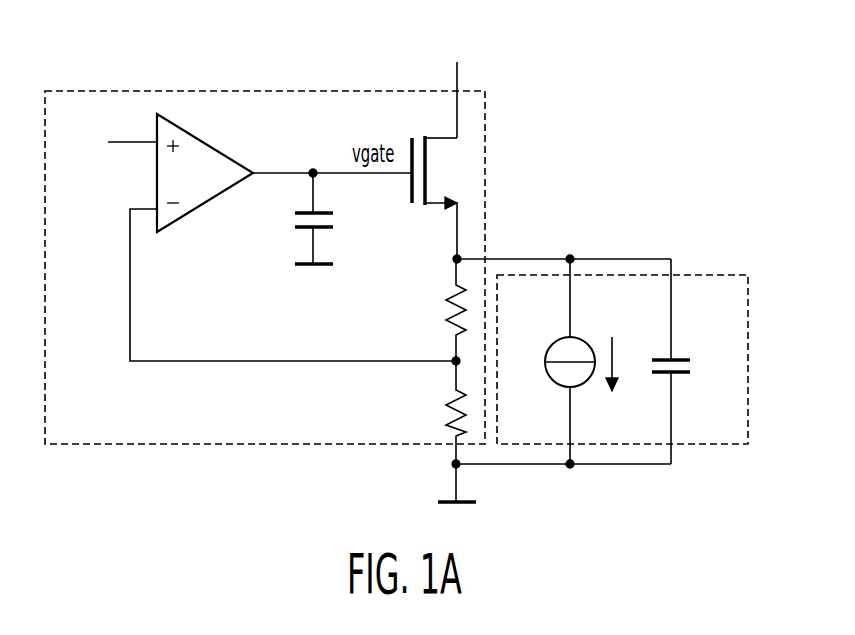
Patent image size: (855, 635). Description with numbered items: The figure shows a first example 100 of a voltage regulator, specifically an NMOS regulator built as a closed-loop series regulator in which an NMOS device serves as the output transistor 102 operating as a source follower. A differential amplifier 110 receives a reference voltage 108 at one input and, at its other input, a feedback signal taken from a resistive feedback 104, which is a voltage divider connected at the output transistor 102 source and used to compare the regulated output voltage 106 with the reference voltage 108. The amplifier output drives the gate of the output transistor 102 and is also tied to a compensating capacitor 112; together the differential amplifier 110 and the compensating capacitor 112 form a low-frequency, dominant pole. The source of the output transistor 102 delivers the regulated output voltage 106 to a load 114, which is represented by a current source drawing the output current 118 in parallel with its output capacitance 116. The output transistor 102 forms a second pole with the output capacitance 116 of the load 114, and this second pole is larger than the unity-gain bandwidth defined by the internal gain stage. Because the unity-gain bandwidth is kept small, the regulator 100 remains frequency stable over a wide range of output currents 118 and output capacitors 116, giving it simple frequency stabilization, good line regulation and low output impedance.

The voltage regulator 100 is at (265, 237).
The output transistor 102 is at (419, 147).
The resistive feedback 104 is at (293, 315).
The regulated output voltage 106 is at (562, 223).
The reference voltage 108 is at (107, 171).
The differential amplifier 110 is at (205, 208).
The compensating capacitor 112 is at (285, 230).
The load 114 is at (622, 322).
The output capacitance 116 is at (688, 361).
The output current 118 is at (568, 361).